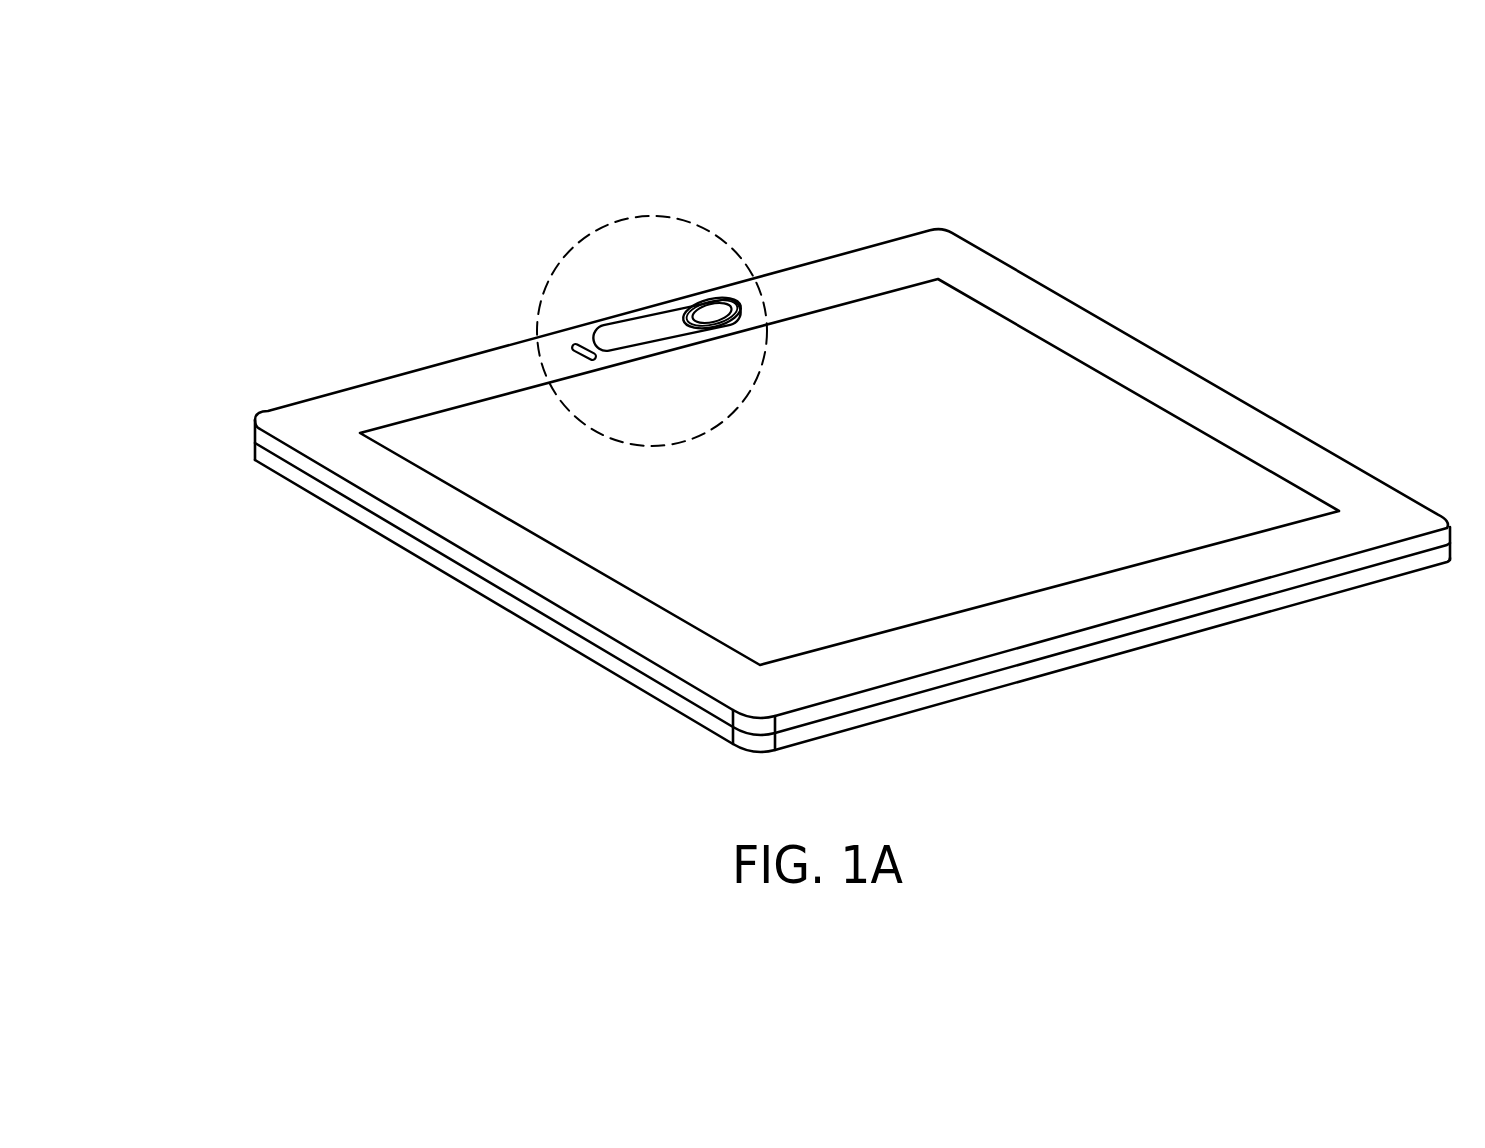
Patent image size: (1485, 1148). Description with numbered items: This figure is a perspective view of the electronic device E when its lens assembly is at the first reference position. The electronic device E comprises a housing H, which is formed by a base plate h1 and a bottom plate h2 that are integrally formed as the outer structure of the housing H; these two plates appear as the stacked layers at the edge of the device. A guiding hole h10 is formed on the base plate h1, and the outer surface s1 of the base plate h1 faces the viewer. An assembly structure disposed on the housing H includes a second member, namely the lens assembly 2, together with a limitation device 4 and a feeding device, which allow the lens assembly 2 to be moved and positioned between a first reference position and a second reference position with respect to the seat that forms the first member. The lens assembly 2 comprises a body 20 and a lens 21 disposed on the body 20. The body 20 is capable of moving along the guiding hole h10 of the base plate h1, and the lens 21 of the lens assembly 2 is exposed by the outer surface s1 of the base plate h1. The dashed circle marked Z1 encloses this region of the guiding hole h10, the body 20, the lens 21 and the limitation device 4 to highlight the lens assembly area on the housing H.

The electronic device E is at (201, 142).
The outer surface s1 is at (423, 369).
The housing H is at (247, 314).
The base plate h1 is at (252, 433).
The bottom plate h2 is at (252, 450).
The enlarged region Z1 is at (740, 250).
The lens assembly 2 is at (723, 164).
The body 20 is at (663, 318).
The guiding hole h10 is at (612, 348).
The lens 21 is at (712, 303).
The limitation device 4 is at (574, 340).